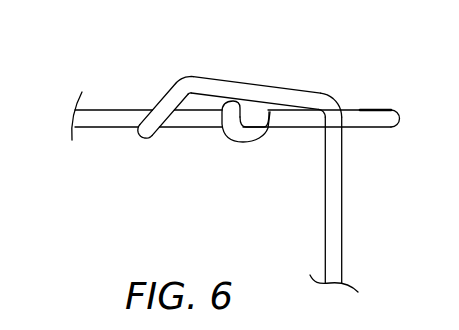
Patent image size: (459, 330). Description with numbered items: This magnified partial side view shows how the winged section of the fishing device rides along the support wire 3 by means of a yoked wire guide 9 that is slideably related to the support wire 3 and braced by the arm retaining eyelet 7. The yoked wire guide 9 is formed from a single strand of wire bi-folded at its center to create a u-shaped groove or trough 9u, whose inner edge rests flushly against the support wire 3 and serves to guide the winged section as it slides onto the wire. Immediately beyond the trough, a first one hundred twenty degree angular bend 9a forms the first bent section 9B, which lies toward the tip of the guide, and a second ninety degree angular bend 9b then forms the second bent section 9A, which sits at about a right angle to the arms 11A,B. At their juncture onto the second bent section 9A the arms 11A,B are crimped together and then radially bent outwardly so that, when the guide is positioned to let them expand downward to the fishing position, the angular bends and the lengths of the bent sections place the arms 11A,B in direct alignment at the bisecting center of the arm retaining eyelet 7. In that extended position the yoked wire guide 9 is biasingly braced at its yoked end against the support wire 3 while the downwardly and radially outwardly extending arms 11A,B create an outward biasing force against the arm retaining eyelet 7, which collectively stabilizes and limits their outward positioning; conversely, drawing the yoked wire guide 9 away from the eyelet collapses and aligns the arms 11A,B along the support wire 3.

The support wire 3 is at (101, 122).
The arm retaining eyelet 7 is at (382, 112).
The yoked wire guide 9 is at (231, 160).
The second bent section 9A is at (268, 90).
The first bent section 9B is at (163, 95).
The first 120 degree angular bend 9a is at (185, 74).
The second 90 degree angular bend 9b is at (333, 103).
The u-shaped groove or trough 9u is at (164, 129).
The arms 11A,B is at (333, 207).